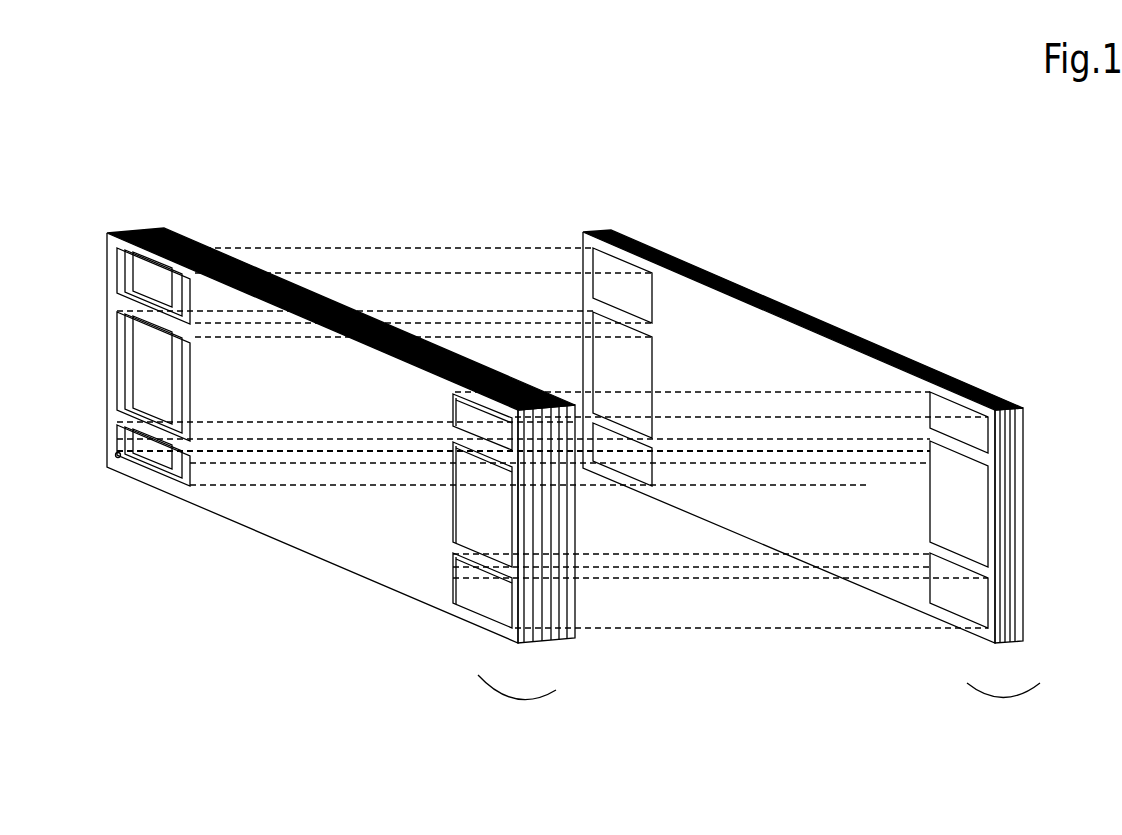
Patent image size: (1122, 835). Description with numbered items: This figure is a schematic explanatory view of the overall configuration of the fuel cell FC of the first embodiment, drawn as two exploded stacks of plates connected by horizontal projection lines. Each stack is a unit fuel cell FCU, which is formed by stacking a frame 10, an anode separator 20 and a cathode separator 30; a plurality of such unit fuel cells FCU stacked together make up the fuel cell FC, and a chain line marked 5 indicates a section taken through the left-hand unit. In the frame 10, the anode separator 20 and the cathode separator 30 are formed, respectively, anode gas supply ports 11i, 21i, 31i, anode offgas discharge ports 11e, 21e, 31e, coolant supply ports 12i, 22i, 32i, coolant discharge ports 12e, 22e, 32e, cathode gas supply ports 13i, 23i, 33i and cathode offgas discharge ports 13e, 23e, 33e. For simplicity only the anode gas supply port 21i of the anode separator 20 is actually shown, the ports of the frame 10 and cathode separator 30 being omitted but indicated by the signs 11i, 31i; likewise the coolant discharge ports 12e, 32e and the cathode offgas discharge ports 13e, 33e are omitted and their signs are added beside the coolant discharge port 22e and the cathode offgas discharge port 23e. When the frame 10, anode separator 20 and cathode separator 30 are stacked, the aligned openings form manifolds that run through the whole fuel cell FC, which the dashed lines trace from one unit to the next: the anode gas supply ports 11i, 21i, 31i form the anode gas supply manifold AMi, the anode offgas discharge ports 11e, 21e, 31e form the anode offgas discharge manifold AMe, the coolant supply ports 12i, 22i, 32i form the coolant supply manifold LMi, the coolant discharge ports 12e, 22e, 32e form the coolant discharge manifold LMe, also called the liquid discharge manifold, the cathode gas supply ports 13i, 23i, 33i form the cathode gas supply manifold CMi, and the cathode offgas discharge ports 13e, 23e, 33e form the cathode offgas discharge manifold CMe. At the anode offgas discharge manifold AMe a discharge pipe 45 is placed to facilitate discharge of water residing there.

The fuel cell FC is at (627, 178).
The unit fuel cell FCU is at (759, 703).
The frame 10 is at (530, 643).
The anode separator 20 is at (493, 633).
The cathode separator 30 is at (545, 643).
The section line 5 is at (148, 200).
The cathode gas supply port 13i is at (125, 258).
The cathode gas supply port 23i is at (112, 290).
The cathode gas supply port 33i is at (196, 287).
The coolant supply port 12i is at (195, 357).
The coolant supply port 22i is at (110, 370).
The coolant supply port 32i is at (197, 390).
The anode offgas discharge port 11e is at (188, 488).
The anode offgas discharge port 21e is at (134, 476).
The anode offgas discharge port 31e is at (198, 468).
The discharge pipe 45 is at (115, 455).
The anode gas supply port 21i is at (452, 403).
The anode gas supply port 11i is at (437, 403).
The anode gas supply port 31i is at (427, 405).
The coolant discharge port 22e is at (452, 511).
The coolant discharge port 12e is at (424, 484).
The coolant discharge port 32e is at (420, 494).
The cathode offgas discharge port 23e is at (452, 573).
The cathode offgas discharge port 13e is at (426, 572).
The cathode offgas discharge port 33e is at (420, 580).
The cathode gas supply manifold CMi is at (406, 248).
The coolant supply manifold LMi is at (304, 338).
The anode offgas discharge manifold AMe is at (280, 422).
The anode gas supply manifold AMi is at (766, 392).
The coolant discharge manifold LMe is at (786, 466).
The cathode offgas discharge manifold CMe is at (825, 629).